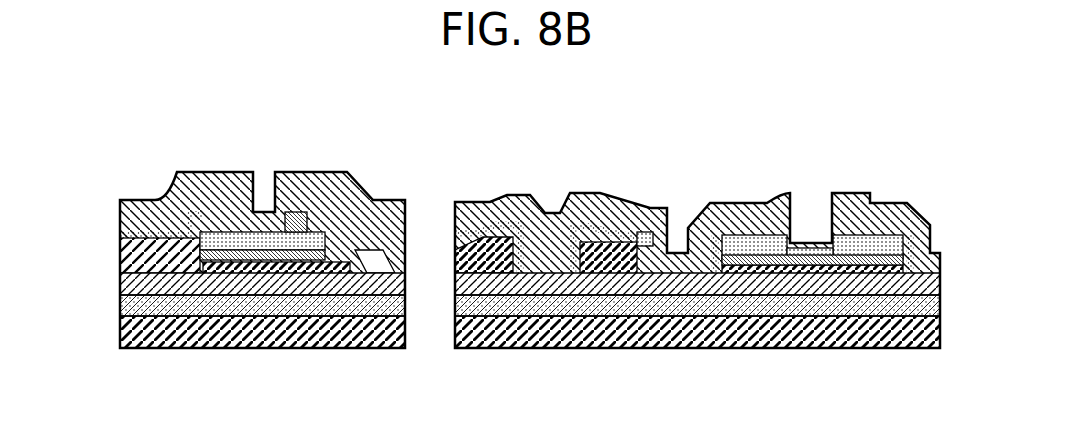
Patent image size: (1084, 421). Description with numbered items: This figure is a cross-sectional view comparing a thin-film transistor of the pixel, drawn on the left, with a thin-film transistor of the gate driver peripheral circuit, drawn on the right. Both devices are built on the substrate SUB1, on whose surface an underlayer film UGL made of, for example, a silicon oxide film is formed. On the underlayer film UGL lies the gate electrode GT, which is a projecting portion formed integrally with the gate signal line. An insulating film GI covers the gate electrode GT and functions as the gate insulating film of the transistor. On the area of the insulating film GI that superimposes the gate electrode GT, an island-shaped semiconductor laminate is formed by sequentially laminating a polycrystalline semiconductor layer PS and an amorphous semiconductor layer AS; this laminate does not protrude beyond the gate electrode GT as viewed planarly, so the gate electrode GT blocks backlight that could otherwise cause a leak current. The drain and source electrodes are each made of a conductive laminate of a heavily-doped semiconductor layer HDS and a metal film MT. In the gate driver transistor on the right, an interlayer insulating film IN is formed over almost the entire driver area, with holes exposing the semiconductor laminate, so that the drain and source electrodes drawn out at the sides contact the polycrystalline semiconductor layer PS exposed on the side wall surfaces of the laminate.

The metal film MT is at (195, 178).
The amorphous semiconductor layer AS is at (232, 238).
The polycrystalline semiconductor layer PS is at (295, 245).
The heavily-doped semiconductor layer HDS is at (337, 228).
The interlayer insulating film IN is at (128, 253).
The substrate SUB1 is at (150, 340).
The gate electrode GT is at (248, 295).
The underlayer film UGL is at (343, 297).
The insulating film GI is at (388, 295).